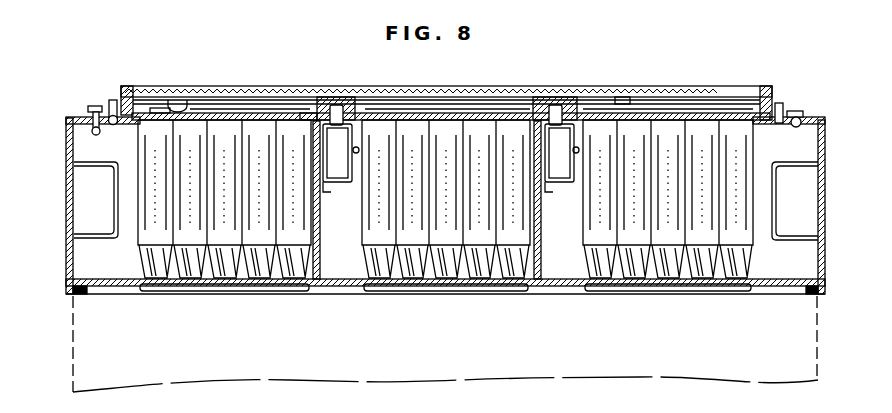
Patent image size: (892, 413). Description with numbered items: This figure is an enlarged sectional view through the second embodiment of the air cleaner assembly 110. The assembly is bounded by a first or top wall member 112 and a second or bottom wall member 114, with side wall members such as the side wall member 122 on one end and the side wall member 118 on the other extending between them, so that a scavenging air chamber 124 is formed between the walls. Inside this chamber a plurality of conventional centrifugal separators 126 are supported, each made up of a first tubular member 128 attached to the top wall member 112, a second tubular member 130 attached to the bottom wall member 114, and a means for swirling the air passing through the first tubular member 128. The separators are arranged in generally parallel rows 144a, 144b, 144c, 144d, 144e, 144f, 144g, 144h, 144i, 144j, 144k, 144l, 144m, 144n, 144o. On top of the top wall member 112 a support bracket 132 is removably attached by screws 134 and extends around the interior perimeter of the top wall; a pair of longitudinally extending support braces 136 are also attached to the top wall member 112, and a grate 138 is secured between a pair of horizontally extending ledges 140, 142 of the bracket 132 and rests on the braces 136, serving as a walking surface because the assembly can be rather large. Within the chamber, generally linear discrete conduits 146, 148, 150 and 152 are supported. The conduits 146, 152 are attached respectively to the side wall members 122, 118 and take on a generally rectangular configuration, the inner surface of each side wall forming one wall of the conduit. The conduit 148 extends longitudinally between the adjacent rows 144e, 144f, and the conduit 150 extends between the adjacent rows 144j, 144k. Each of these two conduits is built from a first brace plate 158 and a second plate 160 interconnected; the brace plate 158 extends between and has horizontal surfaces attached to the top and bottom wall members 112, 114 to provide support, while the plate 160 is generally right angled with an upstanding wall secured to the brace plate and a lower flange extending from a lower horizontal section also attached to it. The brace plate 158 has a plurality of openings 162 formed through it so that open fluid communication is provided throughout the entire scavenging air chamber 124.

The air cleaner assembly 110 is at (693, 50).
The top wall member 112 is at (226, 113).
The bottom wall member 114 is at (350, 288).
The side wall member 118 is at (825, 125).
The side wall member 122 is at (66, 128).
The scavenging air chamber 124 is at (568, 262).
The centrifugal separator 126 is at (478, 141).
The first tubular member 128 is at (262, 135).
The second tubular member 130 is at (283, 275).
The support bracket 132 is at (557, 92).
The screw 134 is at (112, 100).
The support brace 136 is at (340, 104).
The grate 138 is at (407, 100).
The ledge 140 is at (198, 104).
The ledge 142 is at (171, 107).
The row 144a is at (157, 110).
The row 144b is at (183, 274).
The row 144c is at (223, 273).
The row 144d is at (247, 274).
The row 144e is at (316, 112).
The row 144f is at (407, 273).
The row 144g is at (382, 273).
The row 144h is at (483, 273).
The row 144i is at (450, 273).
The row 144j is at (535, 273).
The row 144k is at (633, 273).
The row 144l is at (595, 273).
The row 144m is at (708, 273).
The row 144n is at (727, 296).
The row 144o is at (740, 273).
The conduit 146 is at (124, 214).
The conduit 148 is at (341, 189).
The conduit 150 is at (560, 191).
The conduit 152 is at (763, 229).
The brace plate 158 is at (323, 97).
The second plate 160 is at (358, 150).
The opening 162 is at (305, 272).